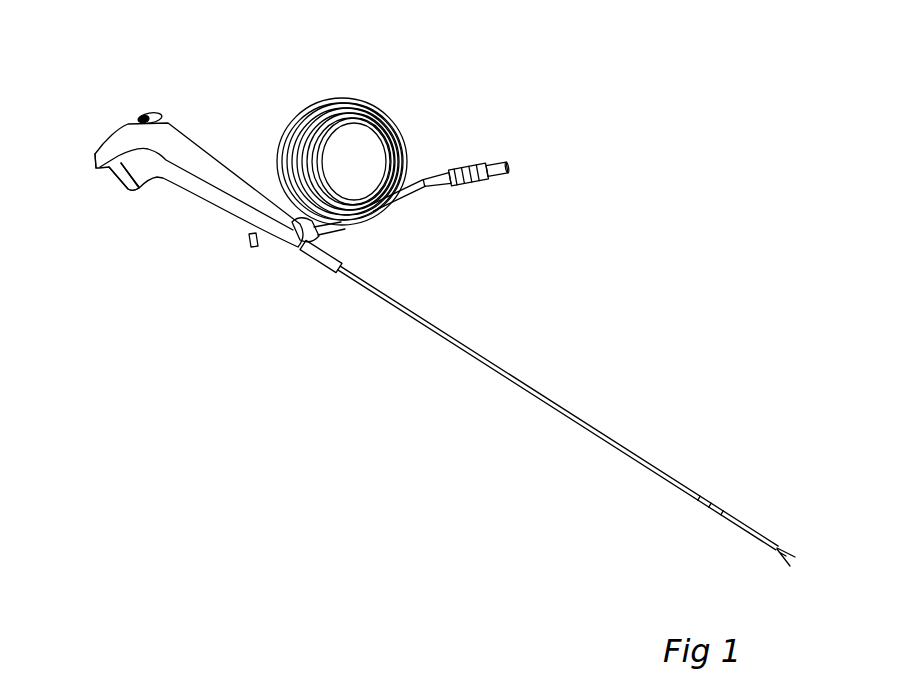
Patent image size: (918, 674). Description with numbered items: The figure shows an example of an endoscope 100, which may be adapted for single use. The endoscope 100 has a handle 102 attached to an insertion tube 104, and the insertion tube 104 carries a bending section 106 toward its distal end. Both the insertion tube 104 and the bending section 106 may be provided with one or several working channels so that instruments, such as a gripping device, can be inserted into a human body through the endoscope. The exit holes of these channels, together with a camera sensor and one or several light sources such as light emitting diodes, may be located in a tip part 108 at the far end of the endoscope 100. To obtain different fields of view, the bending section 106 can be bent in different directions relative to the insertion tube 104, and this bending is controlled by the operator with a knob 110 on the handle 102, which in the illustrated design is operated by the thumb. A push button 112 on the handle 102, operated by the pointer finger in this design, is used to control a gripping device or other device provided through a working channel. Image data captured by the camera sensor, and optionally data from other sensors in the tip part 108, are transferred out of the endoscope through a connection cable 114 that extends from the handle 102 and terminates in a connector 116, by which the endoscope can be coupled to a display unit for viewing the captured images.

The endoscope 100 is at (260, 368).
The handle 102 is at (200, 105).
The insertion tube 104 is at (670, 457).
The bending section 106 is at (743, 522).
The tip part 108 is at (783, 543).
The knob 110 is at (150, 110).
The push button 112 is at (125, 182).
The connection cable 114 is at (397, 101).
The connector 116 is at (478, 190).